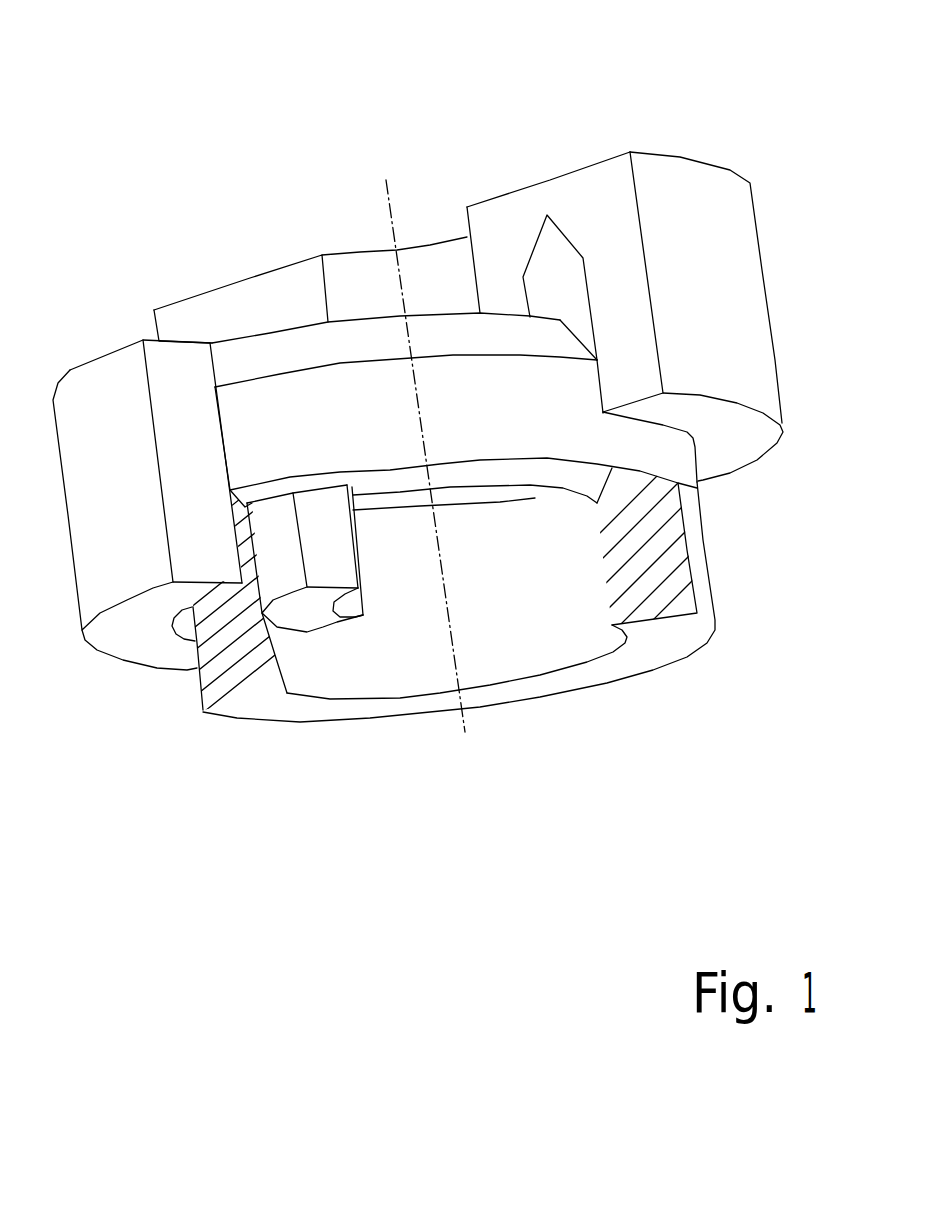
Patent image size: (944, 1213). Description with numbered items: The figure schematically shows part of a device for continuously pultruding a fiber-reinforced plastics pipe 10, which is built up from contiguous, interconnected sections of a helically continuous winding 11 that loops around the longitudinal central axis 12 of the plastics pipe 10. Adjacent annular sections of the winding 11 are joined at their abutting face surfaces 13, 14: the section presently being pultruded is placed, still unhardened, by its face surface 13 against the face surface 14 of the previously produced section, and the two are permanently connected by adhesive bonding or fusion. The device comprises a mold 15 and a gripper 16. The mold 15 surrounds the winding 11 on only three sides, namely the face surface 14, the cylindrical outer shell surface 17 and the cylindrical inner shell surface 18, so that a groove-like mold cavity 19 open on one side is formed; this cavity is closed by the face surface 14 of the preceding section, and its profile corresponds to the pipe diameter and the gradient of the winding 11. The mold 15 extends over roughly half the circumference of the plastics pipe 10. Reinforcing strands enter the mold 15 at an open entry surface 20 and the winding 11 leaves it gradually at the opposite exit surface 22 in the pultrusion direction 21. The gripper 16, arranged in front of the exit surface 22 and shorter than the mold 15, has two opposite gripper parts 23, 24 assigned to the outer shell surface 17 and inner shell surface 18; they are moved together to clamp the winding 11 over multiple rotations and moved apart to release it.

The plastics pipe 10 is at (270, 393).
The winding 11 is at (529, 424).
The longitudinal central axis 12 is at (452, 668).
The face surface 13 is at (558, 477).
The face surface 14 is at (583, 340).
The mold 15 is at (747, 253).
The gripper 16 is at (144, 695).
The cylindrical outer shell surface 17 is at (698, 572).
The cylindrical inner shell surface 18 is at (297, 685).
The groove-like mold cavity 19 is at (562, 262).
The entry surface 20 is at (497, 207).
The pultrusion direction 21 is at (366, 203).
The exit surface 22 is at (182, 317).
The gripper part 23 is at (100, 370).
The gripper part 24 is at (322, 570).